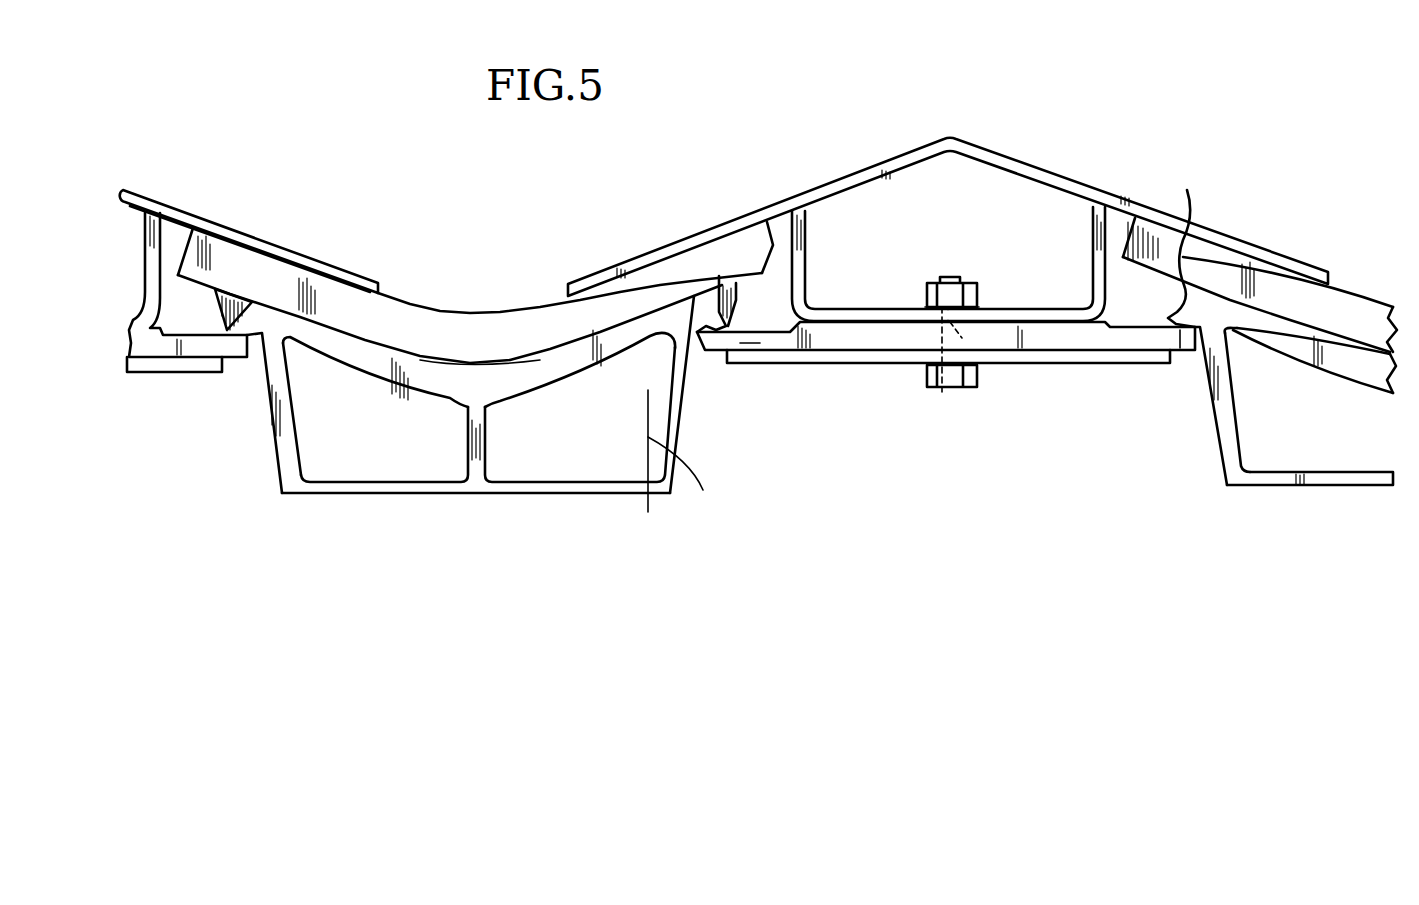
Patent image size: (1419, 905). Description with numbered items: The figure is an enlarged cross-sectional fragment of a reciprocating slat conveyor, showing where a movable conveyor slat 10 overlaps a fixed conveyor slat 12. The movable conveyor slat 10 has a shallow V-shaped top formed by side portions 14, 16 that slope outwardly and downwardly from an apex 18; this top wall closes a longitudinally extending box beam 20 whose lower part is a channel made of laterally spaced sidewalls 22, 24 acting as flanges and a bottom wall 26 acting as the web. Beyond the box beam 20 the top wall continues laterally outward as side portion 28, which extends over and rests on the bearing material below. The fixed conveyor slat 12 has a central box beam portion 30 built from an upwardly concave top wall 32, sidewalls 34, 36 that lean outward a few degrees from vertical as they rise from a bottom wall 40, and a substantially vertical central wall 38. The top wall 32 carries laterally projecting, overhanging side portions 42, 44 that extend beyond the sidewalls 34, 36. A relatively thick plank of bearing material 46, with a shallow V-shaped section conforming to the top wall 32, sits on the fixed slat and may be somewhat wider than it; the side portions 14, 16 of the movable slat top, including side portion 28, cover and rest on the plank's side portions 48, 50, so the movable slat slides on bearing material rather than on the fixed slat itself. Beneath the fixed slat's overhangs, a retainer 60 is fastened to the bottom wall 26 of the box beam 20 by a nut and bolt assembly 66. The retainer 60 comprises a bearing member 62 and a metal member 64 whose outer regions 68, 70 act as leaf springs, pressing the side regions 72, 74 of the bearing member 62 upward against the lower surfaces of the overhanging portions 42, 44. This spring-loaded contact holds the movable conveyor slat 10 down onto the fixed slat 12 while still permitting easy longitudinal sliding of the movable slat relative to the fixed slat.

The movable conveyor slat 10 is at (182, 174).
The fixed conveyor slat 12 is at (805, 434).
The side portion of top wall 14 is at (948, 172).
The side portion of top wall 16 is at (724, 172).
The apex 18 is at (952, 133).
The box beam 20 is at (935, 345).
The sidewall 22 is at (808, 251).
The sidewall 24 is at (1093, 228).
The bottom wall 26 is at (894, 237).
The side portion of top wall 28 is at (332, 263).
The central box beam portion 30 is at (431, 500).
The top wall 32 is at (560, 375).
The sidewall 34 is at (277, 444).
The sidewall 36 is at (673, 420).
The central wall 38 is at (465, 438).
The bottom wall 40 is at (350, 494).
The side portion of top wall 42 is at (238, 332).
The side portion of top wall 44 is at (720, 313).
The plank of bearing material 46 is at (480, 326).
The side portion of bearing plank 48 is at (660, 283).
The side portion of bearing plank 50 is at (248, 263).
The retainer 60 is at (946, 373).
The bearing member 62 is at (823, 338).
The metal member 64 is at (910, 358).
The nut and bolt assembly 66 is at (962, 338).
The outer region of metal member 68 is at (773, 360).
The outer region of metal member 70 is at (940, 377).
The side region of bearing material 72 is at (742, 343).
The side region of bearing material 74 is at (1177, 340).